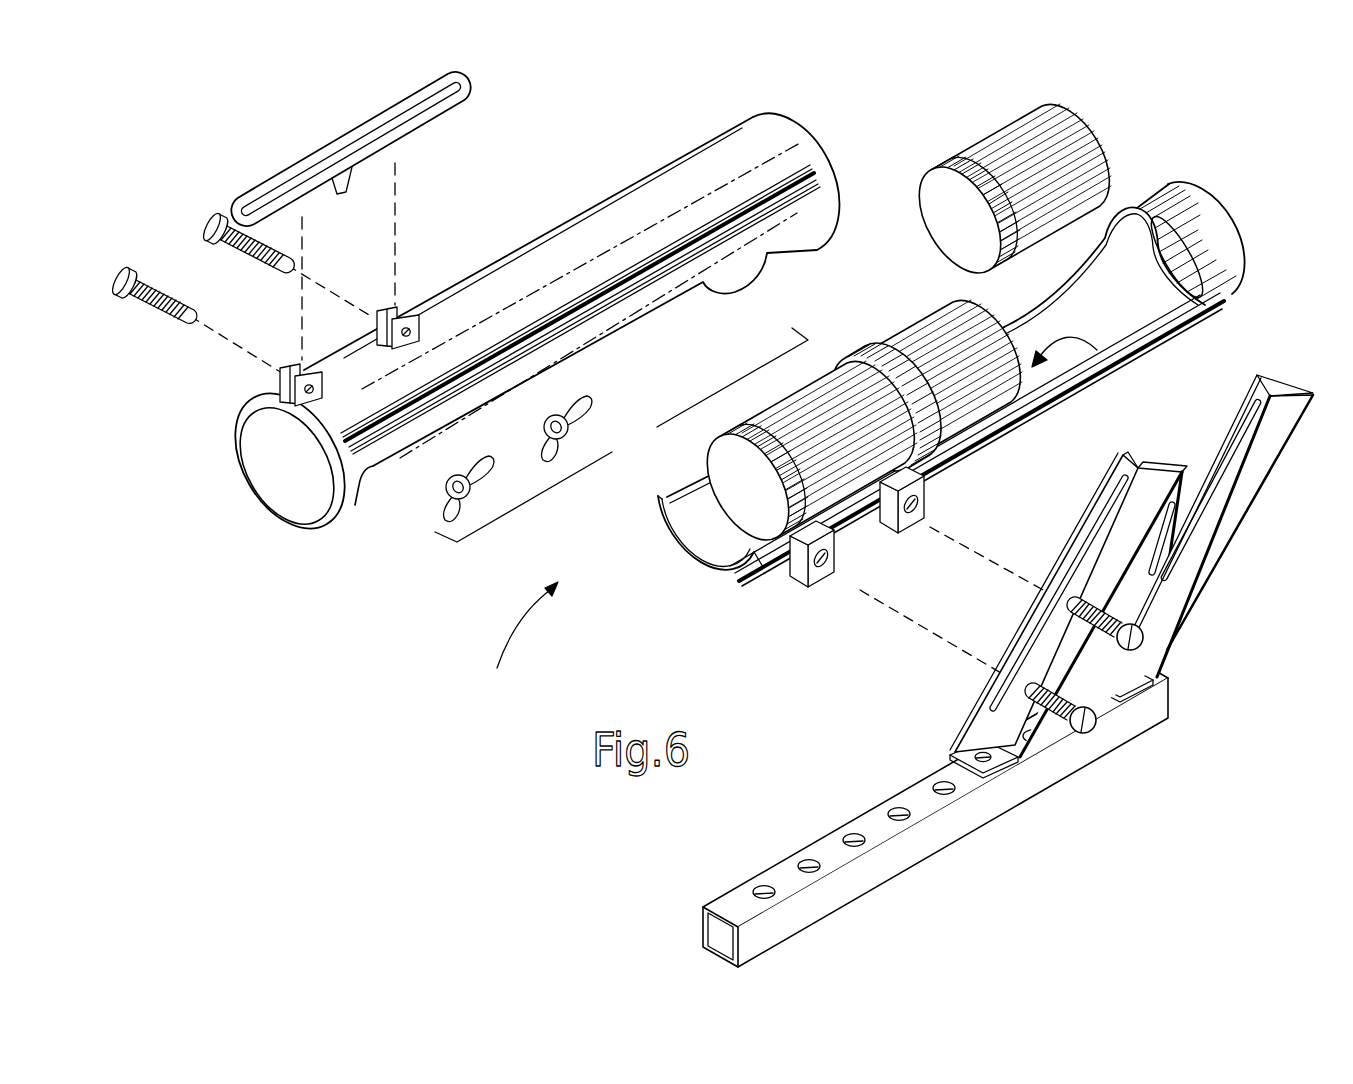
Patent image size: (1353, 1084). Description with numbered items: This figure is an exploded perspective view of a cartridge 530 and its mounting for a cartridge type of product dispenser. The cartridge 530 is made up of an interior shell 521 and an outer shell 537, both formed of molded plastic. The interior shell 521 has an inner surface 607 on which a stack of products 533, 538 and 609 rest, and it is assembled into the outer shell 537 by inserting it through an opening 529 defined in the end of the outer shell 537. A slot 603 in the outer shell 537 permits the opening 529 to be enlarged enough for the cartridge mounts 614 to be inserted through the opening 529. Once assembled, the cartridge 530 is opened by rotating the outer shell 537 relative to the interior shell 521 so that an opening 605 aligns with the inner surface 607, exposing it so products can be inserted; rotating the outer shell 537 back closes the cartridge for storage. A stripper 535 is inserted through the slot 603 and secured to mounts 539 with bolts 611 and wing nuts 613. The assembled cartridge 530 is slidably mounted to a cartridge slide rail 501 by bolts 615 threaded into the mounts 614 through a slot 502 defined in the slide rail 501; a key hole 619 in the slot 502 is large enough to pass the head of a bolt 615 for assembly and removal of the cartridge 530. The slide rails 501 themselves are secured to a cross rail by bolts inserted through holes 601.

The cartridge slide rail 501 is at (1160, 470).
The slot 502 is at (1073, 553).
The interior shell 521 is at (1222, 312).
The opening 529 is at (302, 486).
The cartridge 530 is at (513, 643).
The product 533 is at (821, 406).
The stripper 535 is at (349, 178).
The outer shell 537 is at (596, 222).
The product 538 is at (927, 343).
The mount 539 is at (412, 317).
The hole 601 is at (1145, 712).
The slot 603 is at (343, 357).
The opening 605 is at (621, 435).
The inner surface 607 is at (1098, 352).
The product 609 is at (968, 243).
The bolt 611 is at (112, 274).
The wing nut 613 is at (538, 428).
The cartridge mount 614 is at (914, 530).
The bolt 615 is at (1144, 640).
The key hole 619 is at (1128, 478).